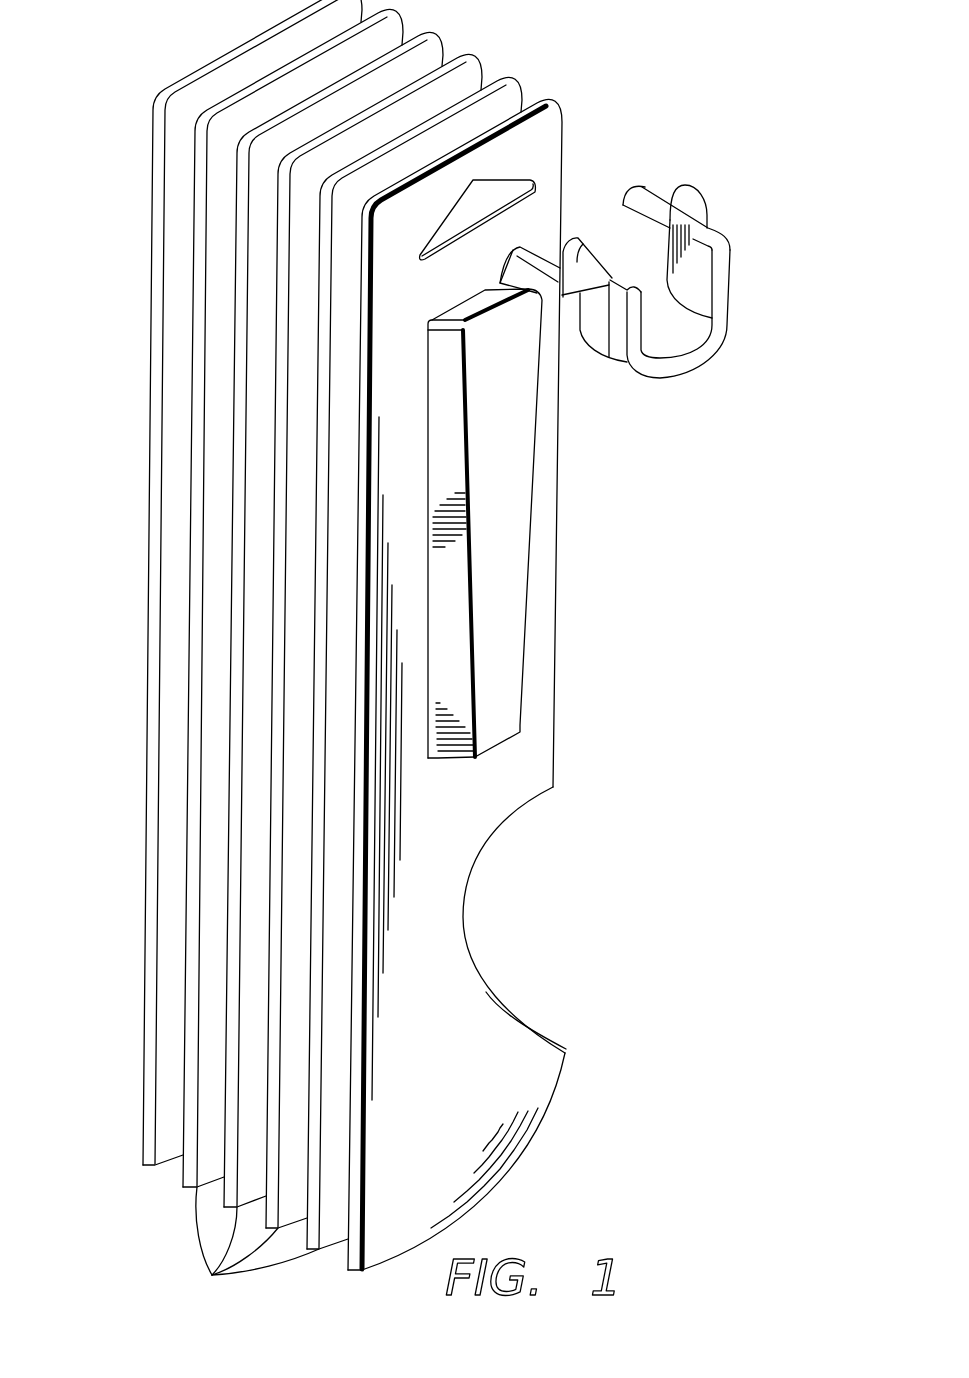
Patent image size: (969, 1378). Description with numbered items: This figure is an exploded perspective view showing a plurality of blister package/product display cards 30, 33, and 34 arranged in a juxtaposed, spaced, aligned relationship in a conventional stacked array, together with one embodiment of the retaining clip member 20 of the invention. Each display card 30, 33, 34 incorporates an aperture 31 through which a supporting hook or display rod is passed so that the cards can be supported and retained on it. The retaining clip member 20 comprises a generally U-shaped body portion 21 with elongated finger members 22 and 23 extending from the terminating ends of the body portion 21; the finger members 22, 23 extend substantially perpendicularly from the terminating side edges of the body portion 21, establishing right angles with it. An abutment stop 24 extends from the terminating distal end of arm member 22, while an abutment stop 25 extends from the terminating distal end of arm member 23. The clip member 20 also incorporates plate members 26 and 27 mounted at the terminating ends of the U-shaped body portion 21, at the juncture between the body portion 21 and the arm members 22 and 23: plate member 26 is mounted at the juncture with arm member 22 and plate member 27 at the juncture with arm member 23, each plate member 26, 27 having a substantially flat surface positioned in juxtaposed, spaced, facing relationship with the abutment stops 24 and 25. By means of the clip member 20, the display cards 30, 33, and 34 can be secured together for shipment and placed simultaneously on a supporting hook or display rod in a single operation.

The retaining clip member 20 is at (650, 226).
The U-shaped body portion 21 is at (662, 330).
The finger member 22 is at (546, 262).
The finger member 23 is at (648, 210).
The abutment stop 24 is at (529, 523).
The abutment stop 25 is at (640, 186).
The plate member 26 is at (581, 260).
The plate member 27 is at (690, 207).
The blister package/product display card 30 is at (517, 1085).
The aperture 31 is at (490, 178).
The blister package/product display card 33 is at (254, 1246).
The blister package/product display card 34 is at (145, 660).